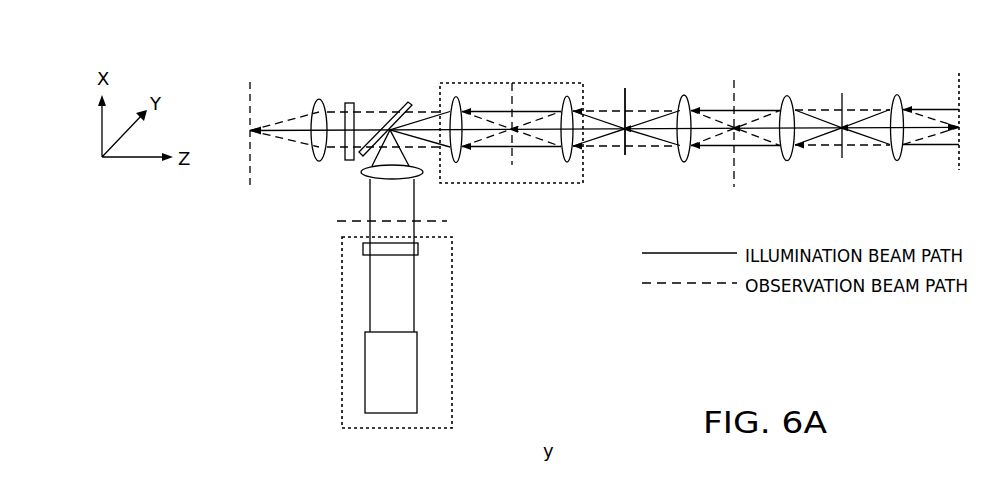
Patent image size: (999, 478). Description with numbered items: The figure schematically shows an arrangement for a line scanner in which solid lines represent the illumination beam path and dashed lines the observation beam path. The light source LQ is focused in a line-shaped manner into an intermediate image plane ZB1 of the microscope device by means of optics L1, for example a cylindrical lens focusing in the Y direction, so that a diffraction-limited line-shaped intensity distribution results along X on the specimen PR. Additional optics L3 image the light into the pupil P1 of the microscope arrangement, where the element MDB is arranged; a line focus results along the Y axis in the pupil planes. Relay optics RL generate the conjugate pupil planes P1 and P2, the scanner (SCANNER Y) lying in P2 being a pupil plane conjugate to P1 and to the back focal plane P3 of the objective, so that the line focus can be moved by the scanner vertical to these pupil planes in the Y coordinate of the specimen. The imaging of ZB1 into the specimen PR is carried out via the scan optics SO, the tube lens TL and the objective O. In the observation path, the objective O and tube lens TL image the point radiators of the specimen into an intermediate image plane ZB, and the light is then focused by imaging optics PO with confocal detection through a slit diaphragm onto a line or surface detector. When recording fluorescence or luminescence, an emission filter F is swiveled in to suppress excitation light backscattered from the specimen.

The imaging optics PO is at (317, 112).
The emission filter F is at (348, 114).
The pupil plane P1 is at (398, 83).
The main dichroic beam splitter element MDB is at (390, 108).
The additional optics L3 is at (378, 183).
The intermediate image plane ZB1 is at (415, 223).
The optics for forming the line L1 is at (412, 332).
The light source LQ is at (404, 374).
The intermediate image plane ZB is at (593, 120).
The relay optics RL is at (511, 126).
The scanner SCANNER Y is at (627, 93).
The pupil plane P2 is at (626, 106).
The scan optics SO is at (681, 111).
The tube lens TL is at (783, 107).
The back focal plane of the objective P3 is at (841, 105).
The objective O is at (895, 107).
The specimen PR is at (958, 109).